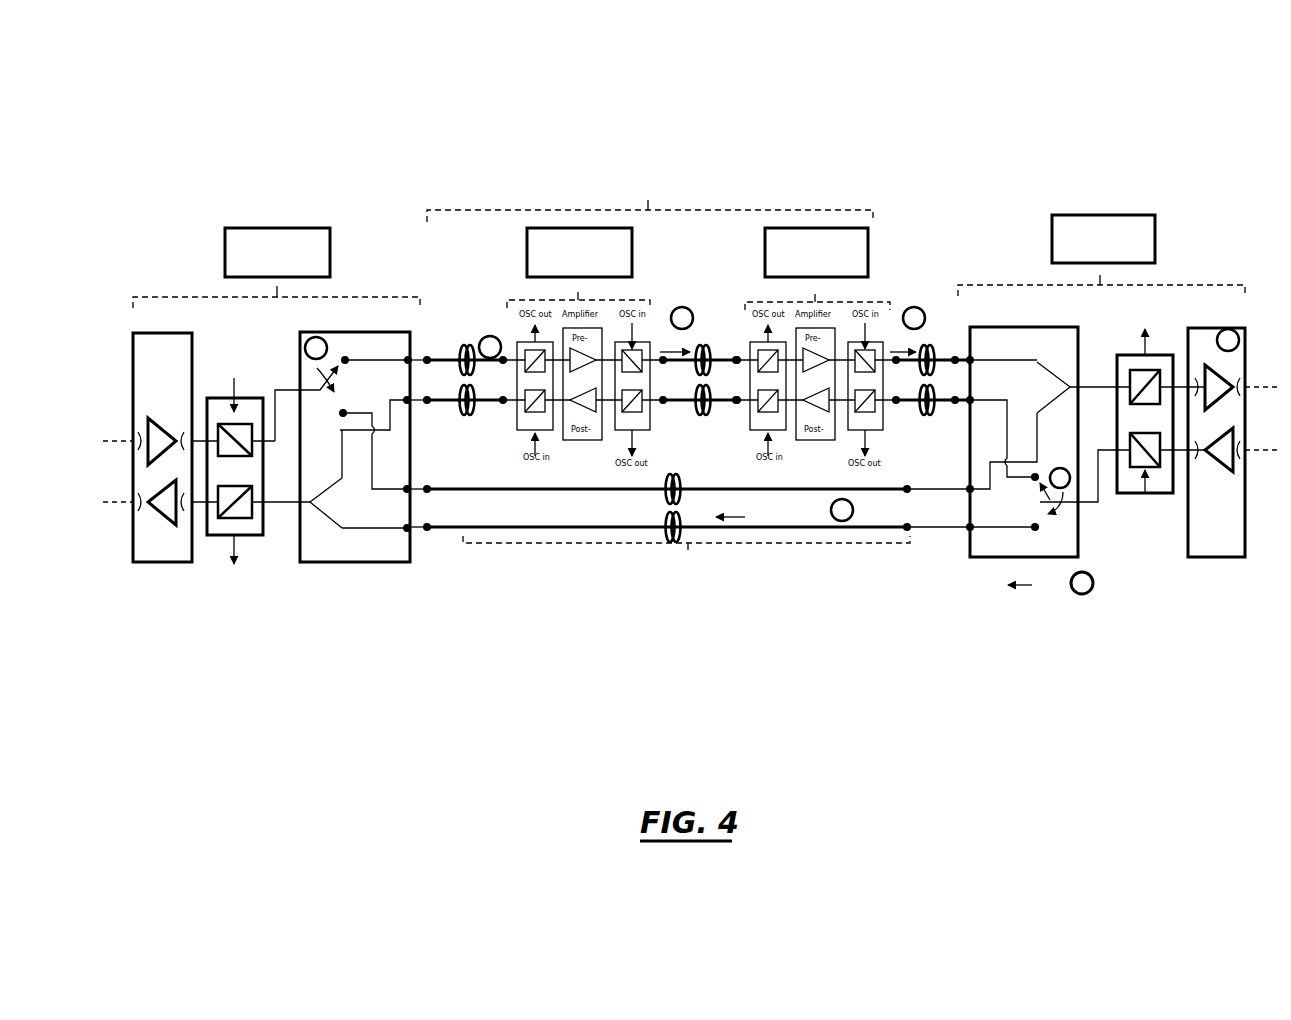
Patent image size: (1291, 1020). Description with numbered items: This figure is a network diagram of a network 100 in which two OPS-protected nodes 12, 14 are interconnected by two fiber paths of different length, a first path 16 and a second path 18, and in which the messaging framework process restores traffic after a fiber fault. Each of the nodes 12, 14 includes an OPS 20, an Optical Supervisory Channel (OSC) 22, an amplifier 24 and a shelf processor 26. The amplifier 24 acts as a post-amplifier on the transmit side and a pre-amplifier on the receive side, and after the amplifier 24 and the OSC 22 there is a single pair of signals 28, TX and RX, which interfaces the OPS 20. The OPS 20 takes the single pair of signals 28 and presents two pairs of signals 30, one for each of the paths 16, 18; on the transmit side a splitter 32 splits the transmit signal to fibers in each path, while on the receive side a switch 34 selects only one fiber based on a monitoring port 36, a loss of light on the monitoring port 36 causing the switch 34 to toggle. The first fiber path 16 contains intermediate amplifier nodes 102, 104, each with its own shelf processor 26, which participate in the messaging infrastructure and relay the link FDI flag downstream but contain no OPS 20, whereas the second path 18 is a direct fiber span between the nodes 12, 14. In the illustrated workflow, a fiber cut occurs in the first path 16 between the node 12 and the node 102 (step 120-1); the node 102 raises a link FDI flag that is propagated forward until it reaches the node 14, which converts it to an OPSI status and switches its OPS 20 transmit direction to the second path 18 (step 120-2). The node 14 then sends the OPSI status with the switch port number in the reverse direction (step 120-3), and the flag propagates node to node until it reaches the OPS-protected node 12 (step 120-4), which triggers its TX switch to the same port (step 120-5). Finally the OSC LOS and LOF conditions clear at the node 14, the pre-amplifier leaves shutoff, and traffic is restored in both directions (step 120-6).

The network 100 is at (706, 118).
The node 12 is at (311, 203).
The node 14 is at (1170, 205).
The path 1 16 is at (688, 203).
The path 2 18 is at (758, 560).
The intermediate amplifier node 102 is at (557, 216).
The intermediate amplifier node 104 is at (827, 216).
The shelf processor 26 is at (330, 247).
The two pairs of signals 30 is at (447, 330).
The OPS 20 is at (385, 563).
The Optical Supervisory Channel (OSC) 22 is at (226, 536).
The amplifier 24 is at (172, 563).
The single pair of signals 28 is at (293, 522).
The splitter 32 is at (359, 400).
The switch 34 is at (352, 522).
The monitoring port 36 is at (691, 448).
The step 120-1 is at (486, 358).
The step 120-2 is at (686, 306).
The step 120-3 is at (1062, 489).
The step 120-4 is at (840, 498).
The step 120-5 is at (313, 338).
The step 120-6 is at (1232, 330).